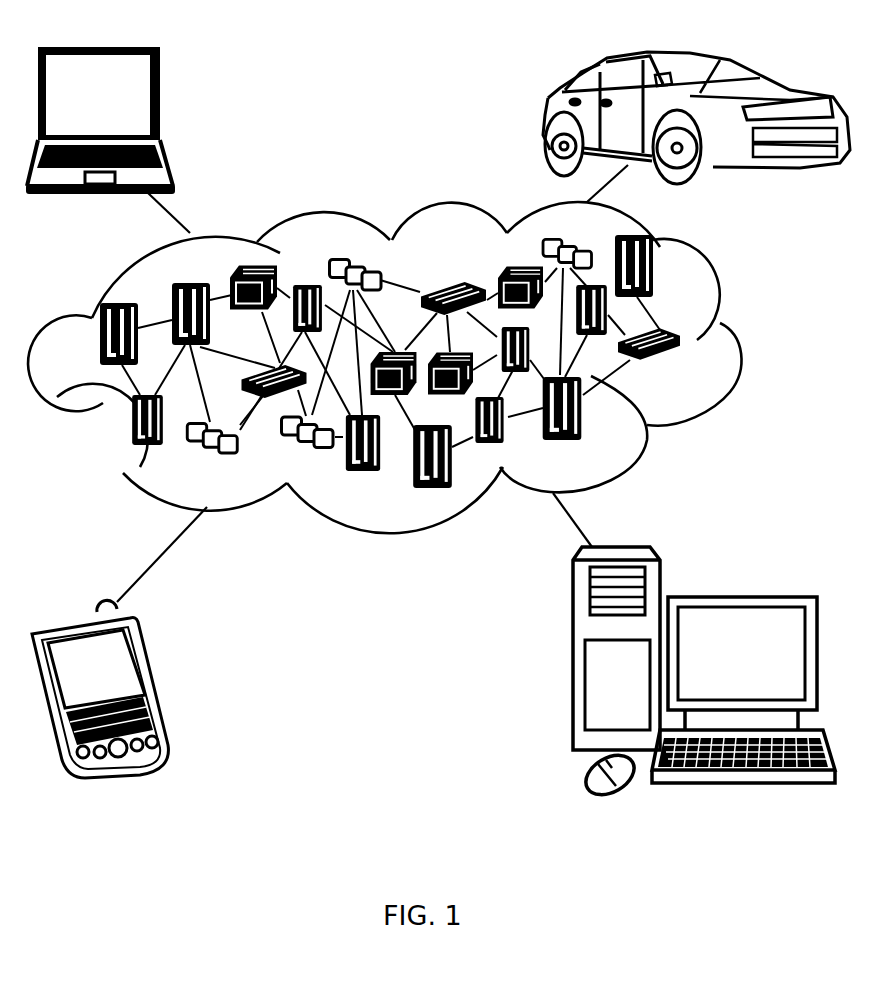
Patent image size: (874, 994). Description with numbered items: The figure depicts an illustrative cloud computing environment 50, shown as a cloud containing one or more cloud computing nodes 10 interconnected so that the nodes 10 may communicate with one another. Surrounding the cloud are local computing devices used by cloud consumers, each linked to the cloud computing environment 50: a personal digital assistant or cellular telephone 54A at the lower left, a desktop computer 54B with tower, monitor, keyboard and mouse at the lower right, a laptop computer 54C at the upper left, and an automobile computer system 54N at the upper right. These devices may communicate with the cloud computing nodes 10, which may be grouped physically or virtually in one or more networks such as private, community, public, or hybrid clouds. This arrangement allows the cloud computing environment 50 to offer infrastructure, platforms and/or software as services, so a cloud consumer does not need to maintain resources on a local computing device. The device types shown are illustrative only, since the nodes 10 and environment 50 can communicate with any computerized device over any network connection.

The cloud computing nodes 10 is at (687, 370).
The cloud computing environment 50 is at (742, 345).
The personal digital assistant or cellular telephone 54A is at (153, 678).
The desktop computer 54B is at (740, 597).
The laptop computer 54C is at (161, 100).
The automobile computer system 54N is at (545, 118).